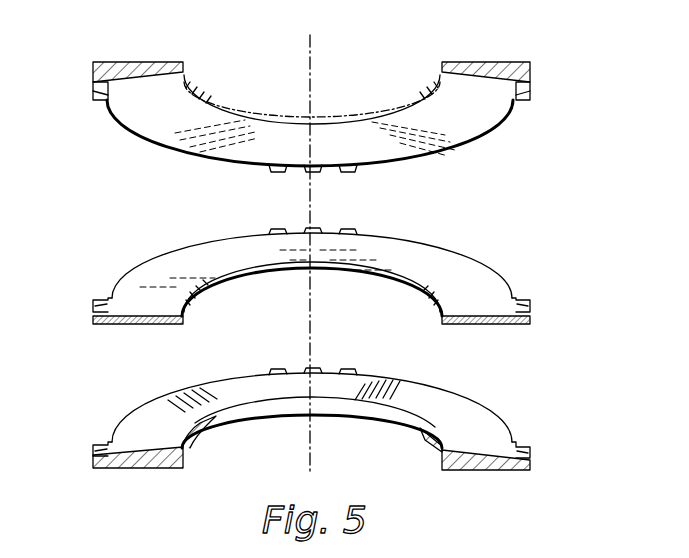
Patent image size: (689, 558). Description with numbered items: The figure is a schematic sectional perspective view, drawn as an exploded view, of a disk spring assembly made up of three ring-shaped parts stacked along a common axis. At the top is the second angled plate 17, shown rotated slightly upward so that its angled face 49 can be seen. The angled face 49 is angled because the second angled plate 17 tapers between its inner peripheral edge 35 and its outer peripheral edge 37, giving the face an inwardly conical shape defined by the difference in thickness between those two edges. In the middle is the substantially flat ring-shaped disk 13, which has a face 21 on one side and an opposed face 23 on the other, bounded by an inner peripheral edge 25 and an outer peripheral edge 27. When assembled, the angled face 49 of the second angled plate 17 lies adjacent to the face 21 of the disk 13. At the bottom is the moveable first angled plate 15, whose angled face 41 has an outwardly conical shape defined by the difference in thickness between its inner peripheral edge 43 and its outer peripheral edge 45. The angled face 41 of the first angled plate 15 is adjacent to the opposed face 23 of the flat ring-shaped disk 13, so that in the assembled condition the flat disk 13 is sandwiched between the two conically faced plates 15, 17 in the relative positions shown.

The ring-shaped disk 13 is at (538, 270).
The first angled plate 15 is at (538, 417).
The second angled plate 17 is at (531, 37).
The face 21 is at (205, 255).
The opposed face 23 is at (453, 327).
The inner peripheral edge 25 is at (366, 268).
The outer peripheral edge 27 is at (418, 243).
The inner peripheral edge 35 is at (443, 82).
The outer peripheral edge 37 is at (531, 104).
The angled face 41 is at (460, 422).
The inner peripheral edge 43 is at (402, 408).
The outer peripheral edge 45 is at (498, 428).
The angled face 49 is at (165, 114).